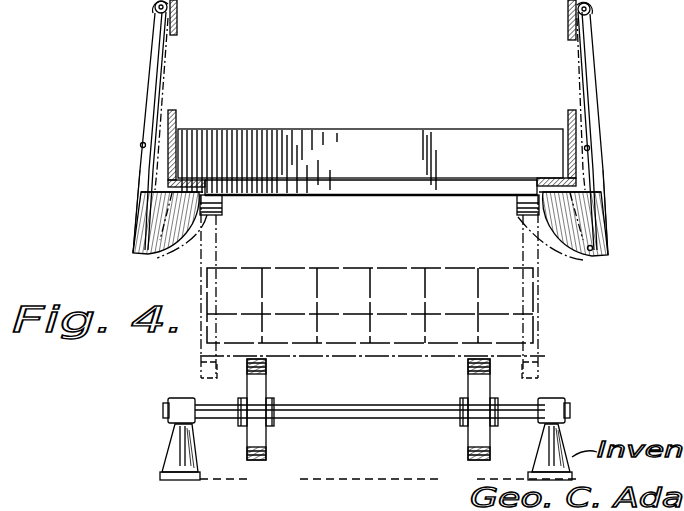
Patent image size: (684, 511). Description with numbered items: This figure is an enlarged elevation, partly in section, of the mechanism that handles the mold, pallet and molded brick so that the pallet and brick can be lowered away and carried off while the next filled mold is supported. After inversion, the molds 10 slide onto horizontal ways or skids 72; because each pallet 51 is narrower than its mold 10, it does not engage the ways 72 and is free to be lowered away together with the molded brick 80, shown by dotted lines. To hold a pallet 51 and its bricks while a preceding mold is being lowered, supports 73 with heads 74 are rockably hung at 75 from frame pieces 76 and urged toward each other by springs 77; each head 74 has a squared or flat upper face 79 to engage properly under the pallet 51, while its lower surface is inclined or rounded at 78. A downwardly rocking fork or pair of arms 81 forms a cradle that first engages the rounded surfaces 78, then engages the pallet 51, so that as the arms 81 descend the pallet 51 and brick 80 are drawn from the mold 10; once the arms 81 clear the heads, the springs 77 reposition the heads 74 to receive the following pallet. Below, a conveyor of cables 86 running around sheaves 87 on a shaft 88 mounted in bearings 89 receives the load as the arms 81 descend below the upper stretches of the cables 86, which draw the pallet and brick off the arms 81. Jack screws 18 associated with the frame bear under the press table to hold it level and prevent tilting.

The mold 10 is at (342, 163).
The jack screw 18 is at (520, 8).
The pallet 51 is at (400, 188).
The horizontal ways 72 is at (177, 118).
The support 73 is at (143, 173).
The head 74 is at (145, 223).
The pivot 75 is at (155, 8).
The frame piece 76 is at (178, 23).
The spring 77 is at (148, 92).
The inclined surface 78 is at (150, 257).
The upper face 79 is at (177, 193).
The molded brick 80 is at (370, 305).
The arm 81 is at (213, 247).
The cable 86 is at (267, 367).
The sheave 87 is at (268, 442).
The shaft 88 is at (382, 412).
The bearing 89 is at (170, 450).